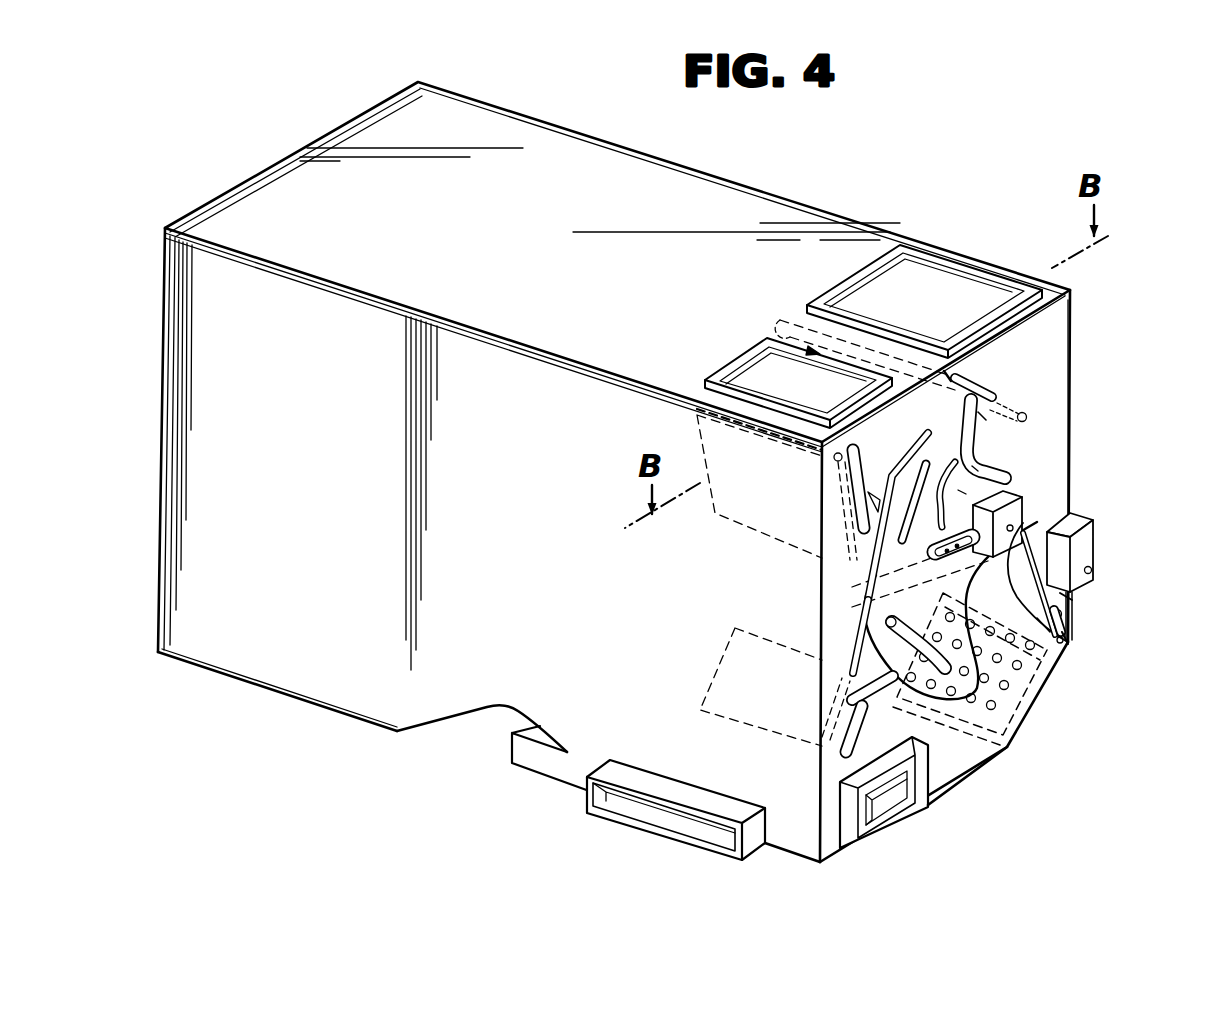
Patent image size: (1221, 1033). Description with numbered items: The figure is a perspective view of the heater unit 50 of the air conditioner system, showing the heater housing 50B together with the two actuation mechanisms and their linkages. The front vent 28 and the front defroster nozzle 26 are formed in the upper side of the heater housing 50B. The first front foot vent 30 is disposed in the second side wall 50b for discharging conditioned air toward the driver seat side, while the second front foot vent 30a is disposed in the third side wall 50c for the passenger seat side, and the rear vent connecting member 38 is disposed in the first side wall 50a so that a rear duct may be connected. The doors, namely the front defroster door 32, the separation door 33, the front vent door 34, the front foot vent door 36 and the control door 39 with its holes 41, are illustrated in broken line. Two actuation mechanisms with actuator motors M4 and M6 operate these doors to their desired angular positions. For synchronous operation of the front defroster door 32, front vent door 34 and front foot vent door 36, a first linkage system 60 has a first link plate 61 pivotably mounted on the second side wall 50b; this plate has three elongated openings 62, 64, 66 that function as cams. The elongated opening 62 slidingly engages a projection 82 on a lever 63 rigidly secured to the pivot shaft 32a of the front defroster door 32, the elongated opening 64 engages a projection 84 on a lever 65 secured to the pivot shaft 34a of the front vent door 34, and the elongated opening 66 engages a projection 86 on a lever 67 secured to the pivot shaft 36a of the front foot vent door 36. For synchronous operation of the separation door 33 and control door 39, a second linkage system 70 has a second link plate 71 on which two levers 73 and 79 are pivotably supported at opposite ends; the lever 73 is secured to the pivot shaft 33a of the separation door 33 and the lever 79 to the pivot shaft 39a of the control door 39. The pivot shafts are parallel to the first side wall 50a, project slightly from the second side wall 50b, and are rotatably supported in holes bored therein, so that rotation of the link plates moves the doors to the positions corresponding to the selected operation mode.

The heater unit 50 is at (778, 172).
The front defroster nozzle 26 is at (855, 292).
The front vent 28 is at (752, 366).
The heater housing 50B is at (1060, 362).
The pivot shaft of the front defroster door 32a is at (950, 376).
The front defroster door 32 is at (1002, 398).
The lever 63 is at (985, 418).
The first link plate 61 is at (980, 436).
The projection 82 is at (952, 445).
The elongated opening 64 is at (922, 457).
The first linkage system 60 is at (980, 468).
The elongated opening 62 is at (962, 492).
The actuator motor M6 is at (1037, 494).
The separation door 33 is at (1076, 497).
The lever 73 is at (1083, 520).
The actuator motor M4 is at (1100, 547).
The second linkage system 70 is at (1080, 598).
The second link plate 71 is at (1074, 606).
The lever 79 is at (1064, 620).
The pivot shaft of the control door 39a is at (1067, 641).
The pivot shaft of the separation door 33a is at (1046, 640).
The holes 41 is at (1027, 664).
The control door 39 is at (1008, 718).
The pivot shaft of the front vent door 34a is at (836, 459).
The lever 65 is at (860, 516).
The projection 84 is at (874, 566).
The projection 86 is at (866, 612).
The elongated opening 66 is at (896, 628).
The front vent door 34 is at (748, 510).
The front foot vent door 36 is at (730, 675).
The pivot shaft of the front foot vent door 36a is at (826, 754).
The lever 67 is at (862, 742).
The third side wall 50c is at (549, 730).
The second front foot vent 30a is at (508, 749).
The rear vent connecting member 38 is at (678, 823).
The first front foot vent 30 is at (893, 806).
The first side wall 50a is at (797, 834).
The second side wall 50b is at (966, 770).